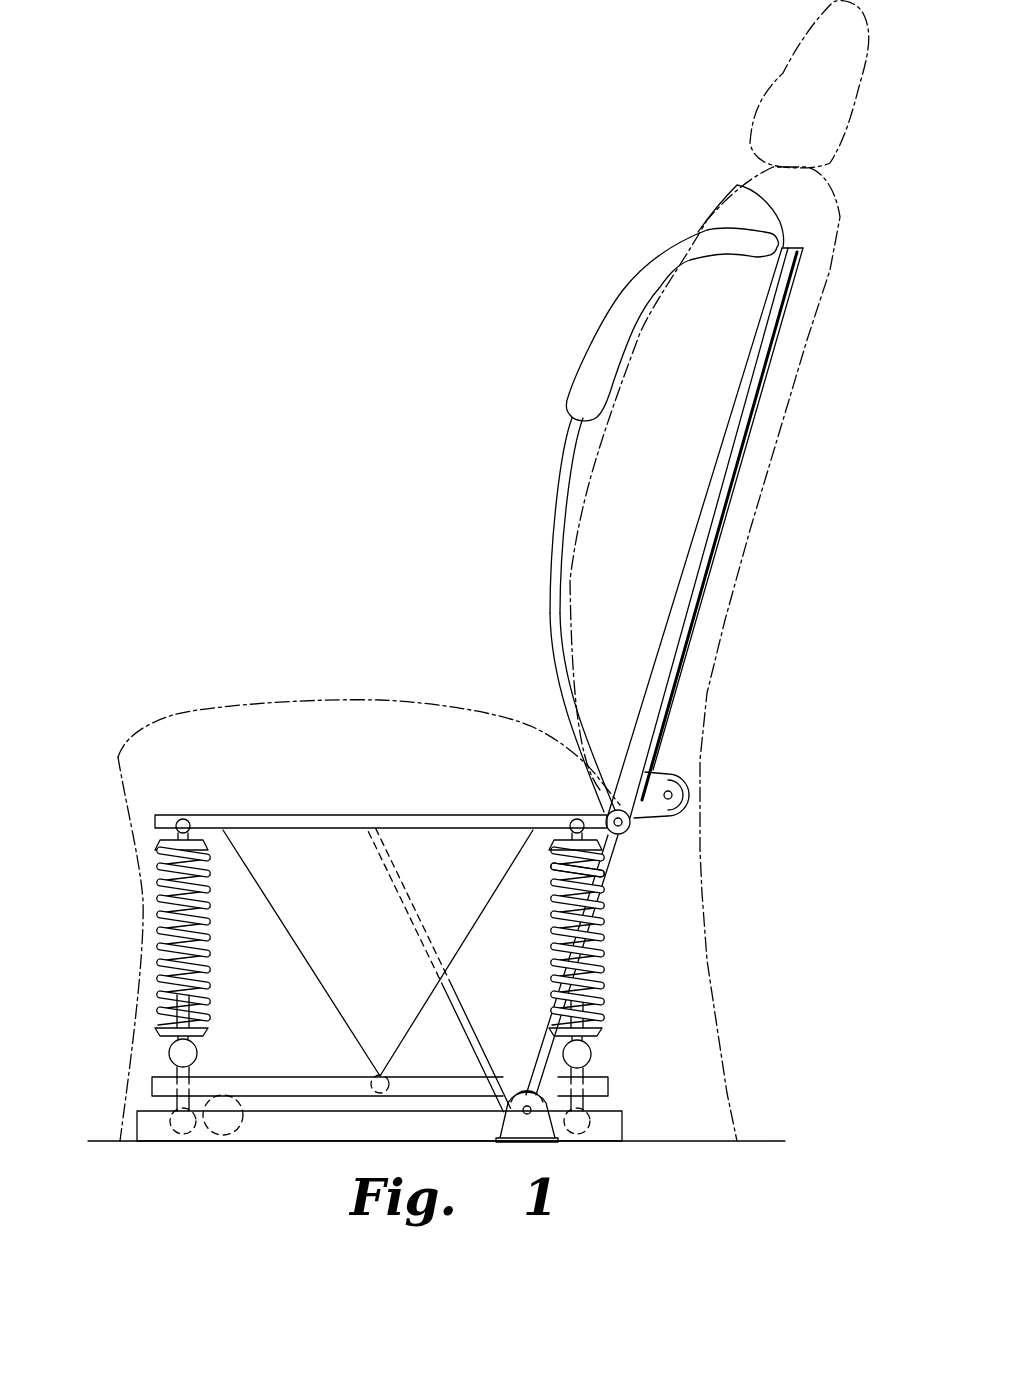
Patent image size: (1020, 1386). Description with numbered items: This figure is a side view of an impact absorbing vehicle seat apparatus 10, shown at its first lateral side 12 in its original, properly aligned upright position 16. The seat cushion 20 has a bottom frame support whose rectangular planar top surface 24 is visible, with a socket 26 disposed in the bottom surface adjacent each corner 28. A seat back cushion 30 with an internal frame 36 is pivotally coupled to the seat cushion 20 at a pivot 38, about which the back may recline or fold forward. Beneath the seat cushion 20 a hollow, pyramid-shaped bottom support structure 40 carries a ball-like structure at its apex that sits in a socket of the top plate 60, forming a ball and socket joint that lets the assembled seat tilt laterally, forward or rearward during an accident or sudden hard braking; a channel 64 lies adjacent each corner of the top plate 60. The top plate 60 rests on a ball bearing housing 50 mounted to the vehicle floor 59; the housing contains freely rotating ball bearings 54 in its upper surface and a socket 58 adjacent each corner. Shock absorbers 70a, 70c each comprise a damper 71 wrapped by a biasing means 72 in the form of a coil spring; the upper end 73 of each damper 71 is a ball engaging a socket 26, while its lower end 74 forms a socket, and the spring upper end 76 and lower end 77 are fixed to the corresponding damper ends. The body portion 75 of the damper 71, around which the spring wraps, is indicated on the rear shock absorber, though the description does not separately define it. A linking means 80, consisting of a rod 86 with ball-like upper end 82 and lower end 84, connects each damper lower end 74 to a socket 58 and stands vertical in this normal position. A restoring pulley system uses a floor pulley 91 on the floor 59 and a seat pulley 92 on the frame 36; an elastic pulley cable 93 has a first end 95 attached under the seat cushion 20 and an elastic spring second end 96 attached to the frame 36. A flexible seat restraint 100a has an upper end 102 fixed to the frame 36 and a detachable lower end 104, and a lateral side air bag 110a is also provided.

The vehicle seat apparatus 10 is at (262, 131).
The first lateral side 12 is at (858, 185).
The upright position 16 is at (848, 388).
The seat cushion 20 is at (360, 770).
The top surface 24 is at (253, 823).
The socket 26 is at (128, 778).
The corner 28 is at (153, 820).
The seat back cushion 30 is at (684, 438).
The internal frame 36 is at (678, 590).
The pivot 38 is at (631, 827).
The bottom support structure 40 is at (375, 933).
The ball bearing housing 50 is at (160, 1130).
The ball bearings 54 is at (243, 1097).
The socket 58 is at (183, 1117).
The floor 59 is at (760, 1141).
The top plate 60 is at (213, 1083).
The channel 64 is at (600, 1057).
The shock absorber 70a is at (157, 915).
The shock absorber 70c is at (605, 933).
The damper 71 is at (600, 887).
The biasing means 72 is at (598, 987).
The upper end 73 is at (590, 836).
The lower end 74 is at (228, 1022).
The spring rod 75 is at (590, 943).
The upper end 76 is at (157, 853).
The lower end 77 is at (173, 1045).
The means for linking 80 is at (168, 1058).
The upper end 82 is at (176, 1068).
The lower end 84 is at (243, 1077).
The rod 86 is at (568, 1078).
The floor pulley 91 is at (533, 1130).
The seat pulley 92 is at (690, 814).
The elastic pulley cable 93 is at (681, 675).
The first end 95 is at (377, 832).
The second end 96 is at (803, 250).
The seat restraint 100a is at (550, 553).
The upper end 102 is at (737, 190).
The lower end 104 is at (607, 800).
The lateral side air bag 110a is at (648, 262).